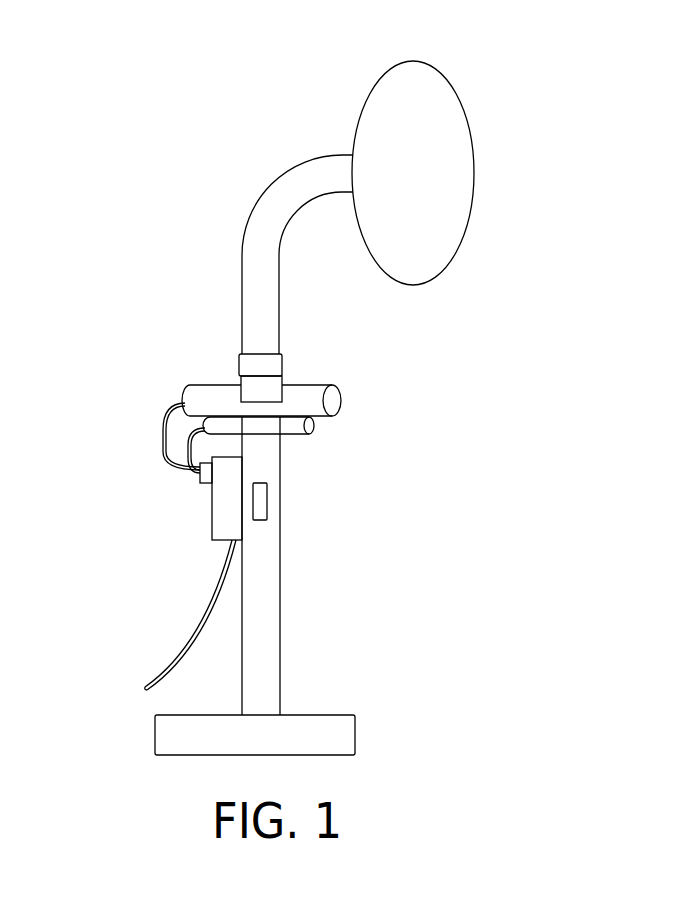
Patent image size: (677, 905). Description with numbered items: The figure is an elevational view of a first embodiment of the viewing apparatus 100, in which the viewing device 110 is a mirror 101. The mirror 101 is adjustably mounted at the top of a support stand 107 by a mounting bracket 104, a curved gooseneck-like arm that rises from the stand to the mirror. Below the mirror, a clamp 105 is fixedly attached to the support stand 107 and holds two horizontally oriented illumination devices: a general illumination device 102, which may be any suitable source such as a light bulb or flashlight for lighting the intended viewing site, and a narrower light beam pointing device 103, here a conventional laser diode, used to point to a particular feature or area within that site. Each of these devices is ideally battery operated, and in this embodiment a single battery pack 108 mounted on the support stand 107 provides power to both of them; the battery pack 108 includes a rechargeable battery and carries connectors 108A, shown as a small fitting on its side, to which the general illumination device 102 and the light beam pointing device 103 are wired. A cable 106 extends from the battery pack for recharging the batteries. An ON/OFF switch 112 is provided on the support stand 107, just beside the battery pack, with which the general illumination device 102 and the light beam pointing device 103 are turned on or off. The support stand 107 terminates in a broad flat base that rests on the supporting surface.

The viewing apparatus 100 is at (182, 158).
The mirror 101 is at (423, 128).
The viewing device 110 is at (443, 222).
The mounting bracket 104 is at (323, 178).
The cable 106 is at (263, 275).
The clamp 105 is at (265, 428).
The general illumination device 102 is at (207, 398).
The light beam pointing device 103 is at (207, 427).
The support stand 107 is at (265, 640).
The battery pack 108 is at (223, 513).
The connectors 108A is at (200, 475).
The ON/OFF switch 112 is at (262, 505).